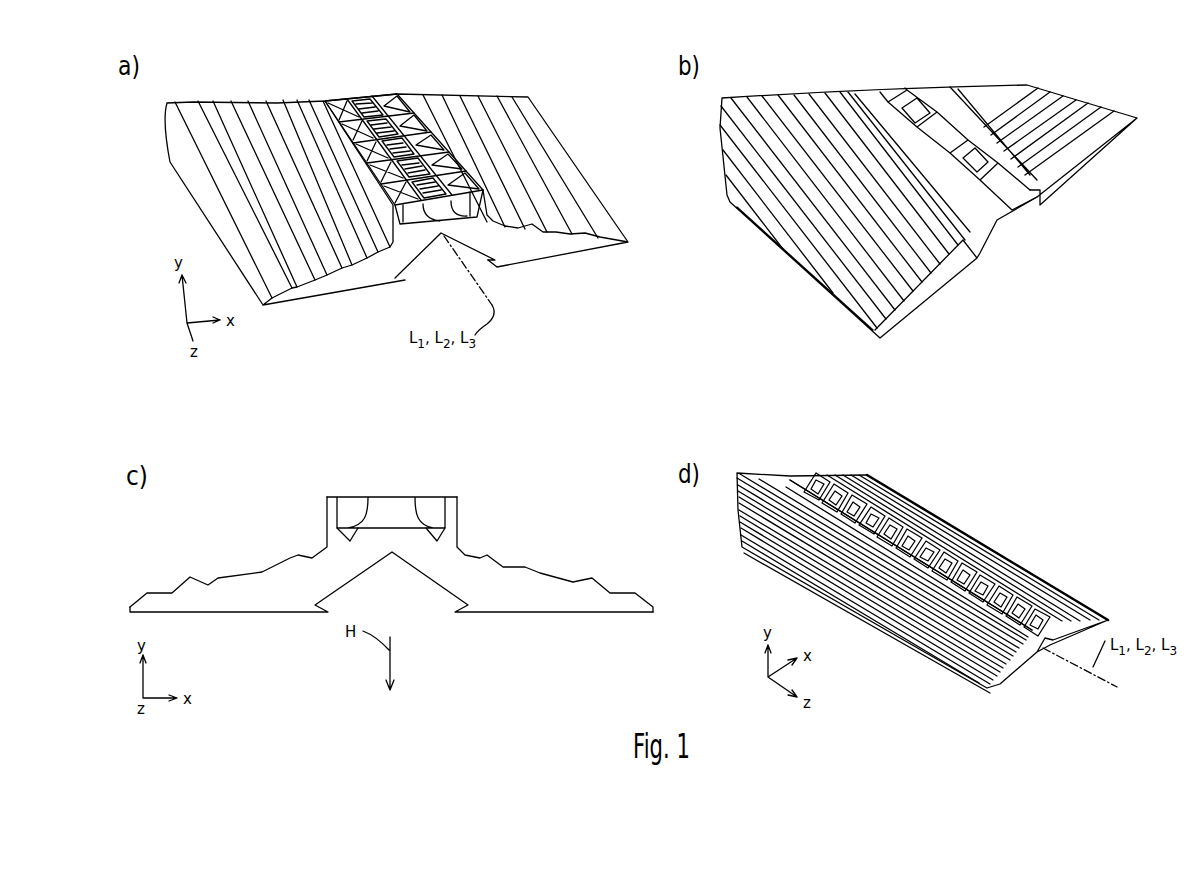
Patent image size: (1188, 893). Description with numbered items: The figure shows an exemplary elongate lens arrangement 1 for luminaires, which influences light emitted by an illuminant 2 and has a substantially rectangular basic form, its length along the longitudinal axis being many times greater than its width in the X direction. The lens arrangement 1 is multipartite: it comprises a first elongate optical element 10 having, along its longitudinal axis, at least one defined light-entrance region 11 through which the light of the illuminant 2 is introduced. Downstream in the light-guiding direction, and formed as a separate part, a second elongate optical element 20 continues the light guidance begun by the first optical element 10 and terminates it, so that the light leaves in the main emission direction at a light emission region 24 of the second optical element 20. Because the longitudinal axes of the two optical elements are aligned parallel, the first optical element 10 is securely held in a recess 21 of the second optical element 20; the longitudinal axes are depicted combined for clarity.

The lens arrangement 1 is at (493, 76).
The illuminant 2 is at (373, 95).
The first optical element 10 is at (330, 100).
The light-entrance region 11 is at (350, 97).
The second optical element 20 is at (550, 247).
The recess 21 is at (405, 228).
The light emission region 24 is at (558, 614).